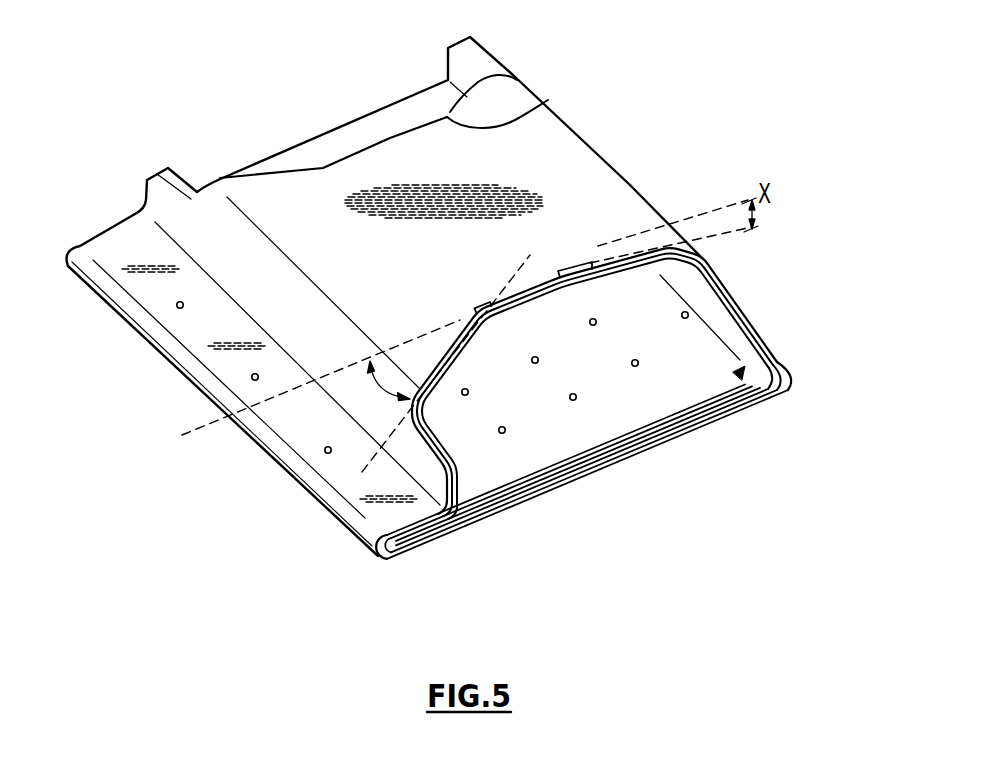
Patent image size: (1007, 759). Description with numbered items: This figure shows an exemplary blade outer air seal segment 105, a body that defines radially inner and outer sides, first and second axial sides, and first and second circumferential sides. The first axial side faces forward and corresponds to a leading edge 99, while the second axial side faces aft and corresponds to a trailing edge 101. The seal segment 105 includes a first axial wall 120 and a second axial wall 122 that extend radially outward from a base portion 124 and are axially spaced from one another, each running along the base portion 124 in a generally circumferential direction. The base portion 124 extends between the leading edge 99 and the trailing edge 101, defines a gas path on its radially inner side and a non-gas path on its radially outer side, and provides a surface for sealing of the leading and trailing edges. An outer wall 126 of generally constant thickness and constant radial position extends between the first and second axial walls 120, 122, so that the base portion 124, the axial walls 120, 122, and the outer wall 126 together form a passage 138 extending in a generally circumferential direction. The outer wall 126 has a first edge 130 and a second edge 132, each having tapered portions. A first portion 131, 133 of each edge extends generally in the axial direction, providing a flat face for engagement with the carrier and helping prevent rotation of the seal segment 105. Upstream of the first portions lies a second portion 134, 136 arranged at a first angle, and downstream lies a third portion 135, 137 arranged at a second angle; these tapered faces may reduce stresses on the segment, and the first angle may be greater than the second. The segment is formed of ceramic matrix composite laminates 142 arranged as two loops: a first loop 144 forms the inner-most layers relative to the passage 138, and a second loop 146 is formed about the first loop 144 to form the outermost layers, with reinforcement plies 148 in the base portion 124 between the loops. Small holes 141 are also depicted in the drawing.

The BOAS segment 105 is at (669, 61).
The leading edge 99 is at (333, 523).
The trailing edge 101 is at (790, 372).
The first axial wall 120 is at (405, 410).
The second axial wall 122 is at (648, 295).
The base portion 124 is at (725, 410).
The outer wall 126 is at (407, 158).
The first edge 130 is at (548, 272).
The first portion 131 is at (526, 283).
The second edge 132 is at (540, 110).
The first portion 133 is at (413, 125).
The second portion 134 is at (433, 363).
The third portion 135 is at (652, 250).
The second portion 136 is at (270, 177).
The third portion 137 is at (512, 86).
The passage 138 is at (693, 282).
The fastener holes 141 is at (575, 437).
The CMC laminates 142 is at (510, 500).
The first loop 144 is at (760, 392).
The second loop 146 is at (683, 420).
The reinforcement plies 148 is at (458, 522).